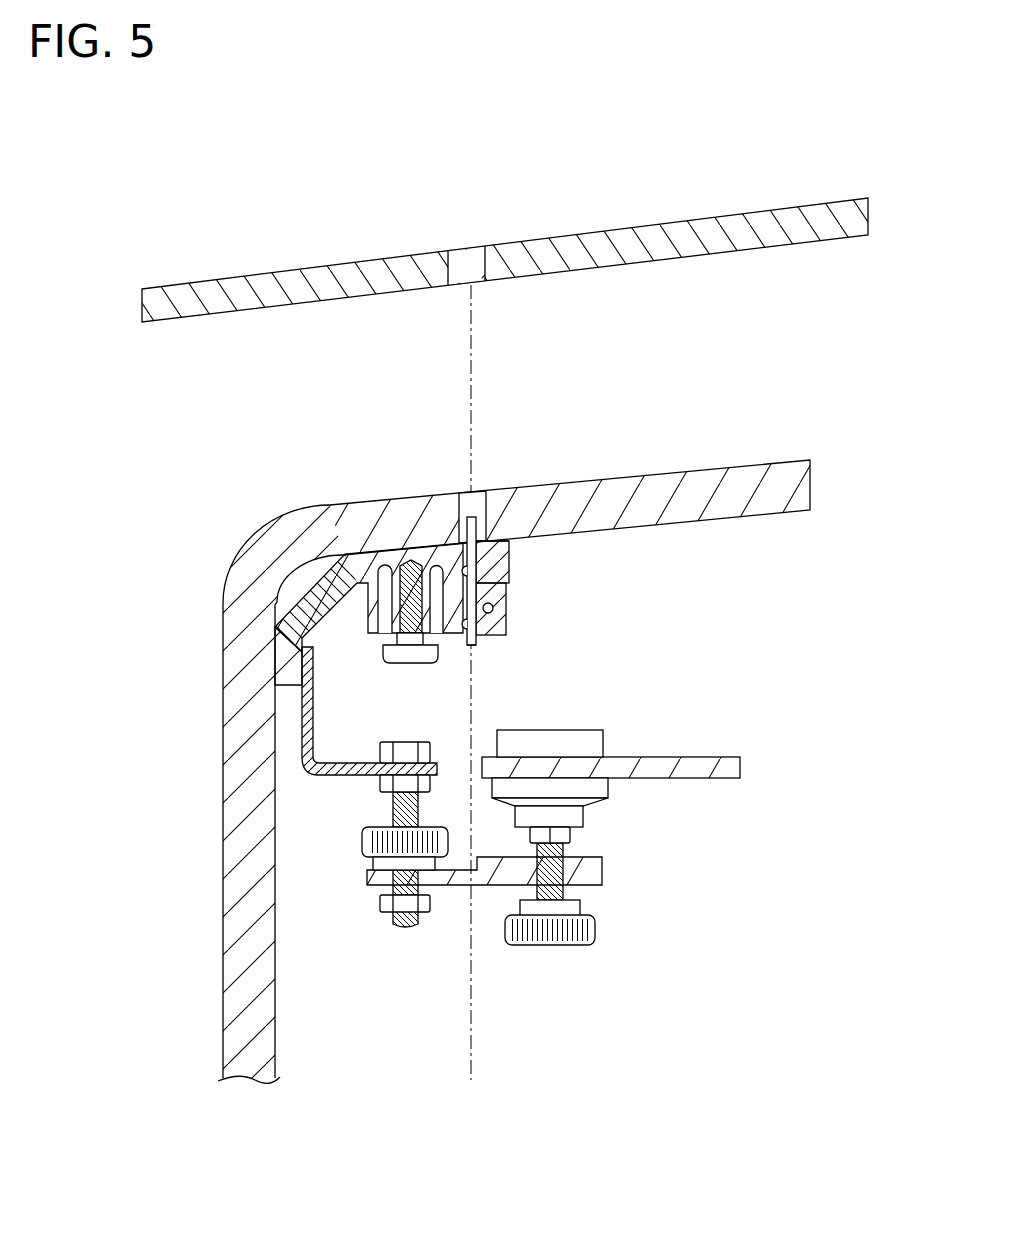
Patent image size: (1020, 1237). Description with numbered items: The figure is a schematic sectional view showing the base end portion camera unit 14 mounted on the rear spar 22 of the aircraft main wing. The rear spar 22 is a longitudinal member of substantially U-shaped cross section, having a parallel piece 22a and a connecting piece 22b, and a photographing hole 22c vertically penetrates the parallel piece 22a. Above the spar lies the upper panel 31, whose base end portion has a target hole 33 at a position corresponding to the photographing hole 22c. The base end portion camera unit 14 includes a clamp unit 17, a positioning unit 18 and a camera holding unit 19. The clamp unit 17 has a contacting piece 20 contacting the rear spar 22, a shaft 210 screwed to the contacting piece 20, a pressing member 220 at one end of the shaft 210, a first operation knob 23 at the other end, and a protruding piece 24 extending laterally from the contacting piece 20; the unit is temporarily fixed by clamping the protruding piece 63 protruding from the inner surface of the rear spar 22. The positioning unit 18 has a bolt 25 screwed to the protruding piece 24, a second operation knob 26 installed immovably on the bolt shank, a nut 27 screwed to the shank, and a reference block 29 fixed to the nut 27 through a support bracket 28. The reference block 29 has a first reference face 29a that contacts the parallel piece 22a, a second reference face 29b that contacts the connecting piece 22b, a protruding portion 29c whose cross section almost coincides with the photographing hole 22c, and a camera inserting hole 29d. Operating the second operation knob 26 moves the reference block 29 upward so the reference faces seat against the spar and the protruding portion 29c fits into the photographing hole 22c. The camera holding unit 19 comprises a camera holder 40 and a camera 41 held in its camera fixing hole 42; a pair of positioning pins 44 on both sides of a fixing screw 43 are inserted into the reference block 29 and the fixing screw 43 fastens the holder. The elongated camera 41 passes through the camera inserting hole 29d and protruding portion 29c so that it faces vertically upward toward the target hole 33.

The base end portion camera unit 14 is at (668, 818).
The clamp unit 17 is at (608, 921).
The positioning unit 18 is at (383, 850).
The camera holding unit 19 is at (538, 608).
The contacting piece 20 is at (572, 732).
The rear spar 22 is at (436, 737).
The parallel piece 22a is at (570, 473).
The connecting piece 22b is at (223, 935).
The photographing hole 22c is at (466, 505).
The first operation knob 23 is at (553, 946).
The protruding piece 24 is at (452, 886).
The bolt 25 is at (405, 930).
The second operation knob 26 is at (364, 840).
The nut 27 is at (432, 778).
The support bracket 28 is at (315, 716).
The reference block 29 is at (401, 594).
The first reference face 29a is at (402, 581).
The second reference face 29b is at (290, 703).
The protruding portion 29c is at (496, 559).
The camera inserting hole 29d is at (553, 564).
The upper panel 31 is at (505, 215).
The target hole 33 is at (462, 262).
The camera holder 40 is at (512, 632).
The camera 41 is at (496, 548).
The camera fixing hole 42 is at (476, 640).
The fixing screw 43 is at (408, 666).
The positioning pins 44 is at (383, 568).
The protruding piece 63 is at (728, 784).
The shaft 210 is at (568, 880).
The pressing member 220 is at (610, 790).